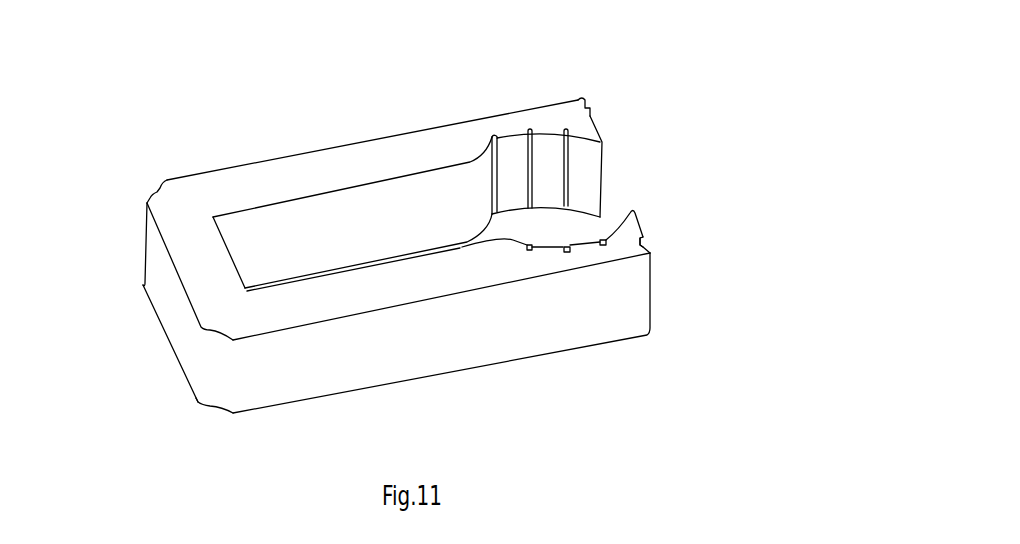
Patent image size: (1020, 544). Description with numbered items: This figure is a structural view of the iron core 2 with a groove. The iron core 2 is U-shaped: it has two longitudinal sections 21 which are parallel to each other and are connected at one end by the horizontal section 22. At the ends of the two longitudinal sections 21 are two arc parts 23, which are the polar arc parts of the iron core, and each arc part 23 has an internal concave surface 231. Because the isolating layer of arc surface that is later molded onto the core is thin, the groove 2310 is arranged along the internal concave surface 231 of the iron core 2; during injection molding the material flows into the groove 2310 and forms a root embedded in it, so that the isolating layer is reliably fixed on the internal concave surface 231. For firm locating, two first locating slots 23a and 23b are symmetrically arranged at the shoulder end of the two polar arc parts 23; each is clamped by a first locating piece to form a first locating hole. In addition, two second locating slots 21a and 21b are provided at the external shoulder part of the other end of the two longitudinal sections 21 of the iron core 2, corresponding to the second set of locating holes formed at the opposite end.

The iron core 2 is at (282, 130).
The longitudinal section 21 is at (275, 185).
The second locating slot 21a is at (160, 188).
The second locating slot 21b is at (218, 350).
The horizontal section 22 is at (192, 262).
The arc part 23 is at (558, 115).
The first locating slot 23a is at (590, 113).
The first locating slot 23b is at (645, 243).
The internal concave surface 231 is at (513, 150).
The groove 2310 is at (493, 137).